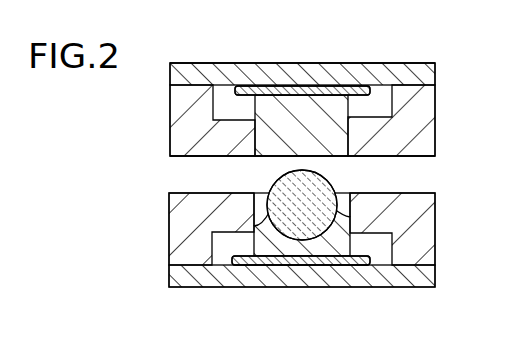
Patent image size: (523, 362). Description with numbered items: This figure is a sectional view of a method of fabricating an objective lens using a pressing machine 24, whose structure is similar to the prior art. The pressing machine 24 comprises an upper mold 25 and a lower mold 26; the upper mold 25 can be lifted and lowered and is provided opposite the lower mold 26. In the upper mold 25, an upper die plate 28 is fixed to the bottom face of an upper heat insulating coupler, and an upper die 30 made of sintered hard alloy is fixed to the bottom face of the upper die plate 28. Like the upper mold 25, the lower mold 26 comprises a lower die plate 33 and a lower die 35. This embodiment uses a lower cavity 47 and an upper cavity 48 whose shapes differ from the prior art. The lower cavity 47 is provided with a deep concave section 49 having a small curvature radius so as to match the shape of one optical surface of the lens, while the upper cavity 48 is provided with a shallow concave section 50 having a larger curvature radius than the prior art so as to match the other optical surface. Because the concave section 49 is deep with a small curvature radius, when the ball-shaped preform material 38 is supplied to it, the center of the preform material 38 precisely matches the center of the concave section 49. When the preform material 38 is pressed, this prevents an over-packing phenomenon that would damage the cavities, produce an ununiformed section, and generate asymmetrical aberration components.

The pressing machine 24 is at (345, 51).
The upper mold 25 is at (406, 63).
The lower mold 26 is at (378, 291).
The upper die plate 28 is at (437, 71).
The upper die 30 is at (420, 113).
The lower die plate 33 is at (418, 275).
The lower die 35 is at (418, 232).
The preform material 38 is at (322, 176).
The lower cavity 47 is at (262, 258).
The upper cavity 48 is at (284, 96).
The concave section 49 is at (337, 222).
The shallow concave section 50 is at (277, 157).